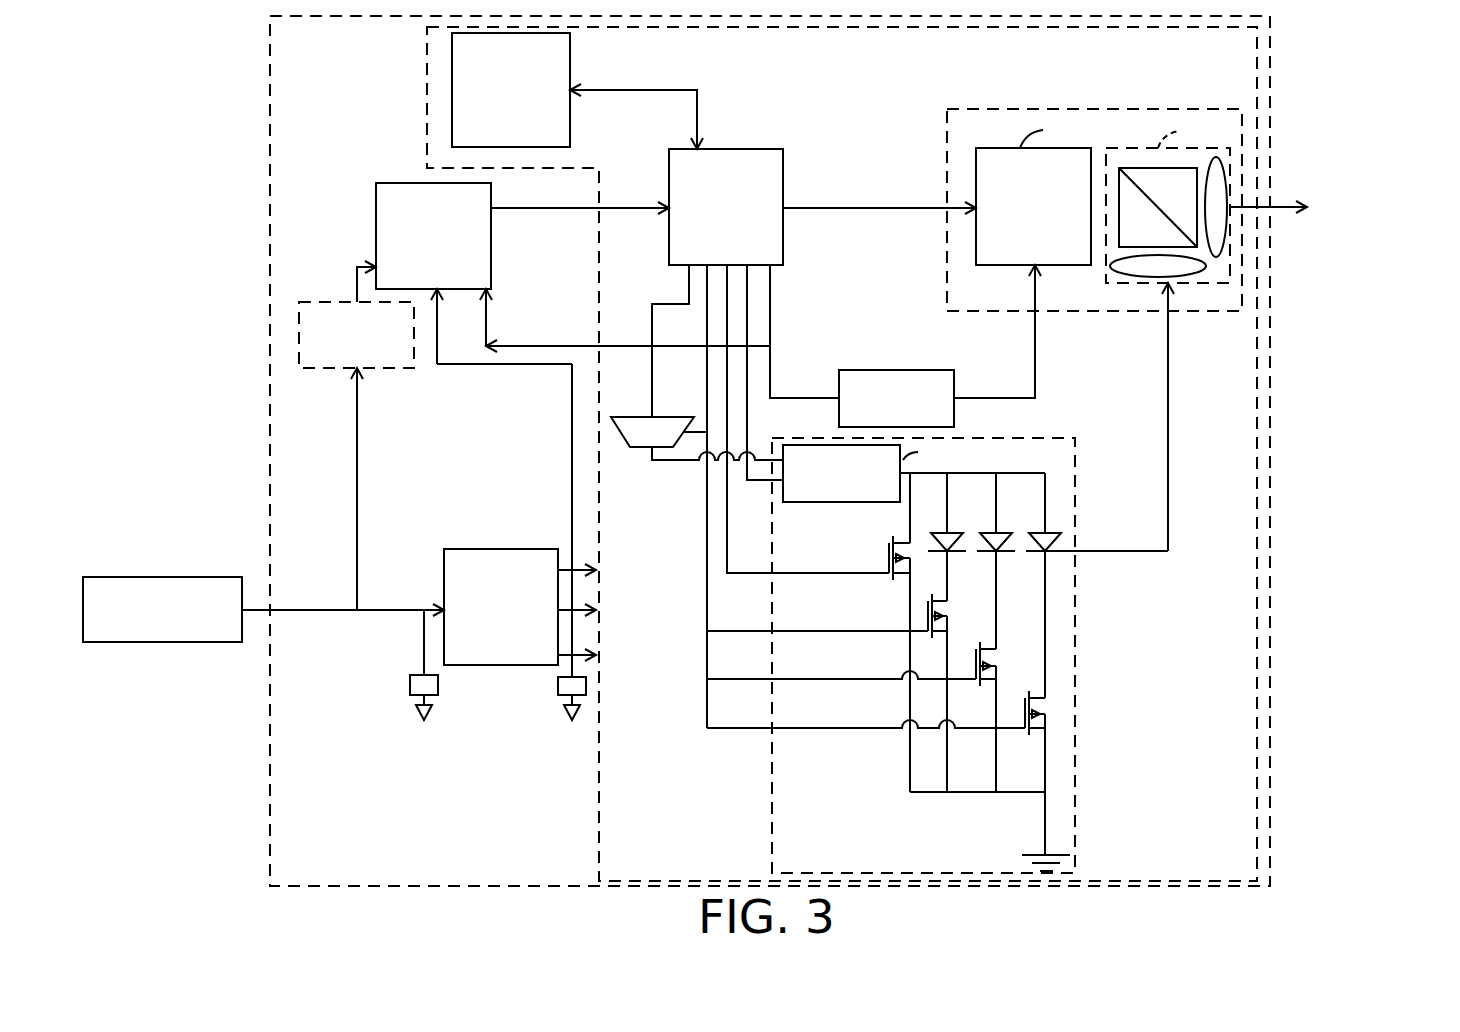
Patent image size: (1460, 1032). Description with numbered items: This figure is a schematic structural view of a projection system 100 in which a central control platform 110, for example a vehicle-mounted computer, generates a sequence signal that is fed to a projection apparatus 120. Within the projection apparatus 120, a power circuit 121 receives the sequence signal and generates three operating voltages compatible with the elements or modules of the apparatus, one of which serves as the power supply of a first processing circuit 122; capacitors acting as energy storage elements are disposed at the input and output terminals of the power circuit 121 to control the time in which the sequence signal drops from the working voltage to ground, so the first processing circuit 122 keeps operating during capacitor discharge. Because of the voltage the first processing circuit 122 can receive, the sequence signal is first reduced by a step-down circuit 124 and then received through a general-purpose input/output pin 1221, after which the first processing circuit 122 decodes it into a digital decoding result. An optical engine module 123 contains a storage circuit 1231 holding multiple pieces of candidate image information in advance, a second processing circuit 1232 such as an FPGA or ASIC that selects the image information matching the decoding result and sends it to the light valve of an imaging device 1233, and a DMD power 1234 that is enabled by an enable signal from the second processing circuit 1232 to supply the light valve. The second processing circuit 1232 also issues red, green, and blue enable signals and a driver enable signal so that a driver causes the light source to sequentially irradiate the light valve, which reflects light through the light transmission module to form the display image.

The projection system 100 is at (185, 117).
The central control platform 110 is at (190, 577).
The projection apparatus 120 is at (1272, 62).
The power circuit 121 is at (500, 549).
The first processing circuit 122 is at (491, 241).
The optical engine module 123 is at (1258, 120).
The step-down circuit 124 is at (389, 368).
The general-purpose input/output (GPIO) pin 1221 is at (367, 251).
The storage circuit 1231 is at (571, 58).
The second processing circuit 1232 is at (745, 149).
The imaging device 1233 is at (1363, 302).
The DMD power 1234 is at (907, 370).